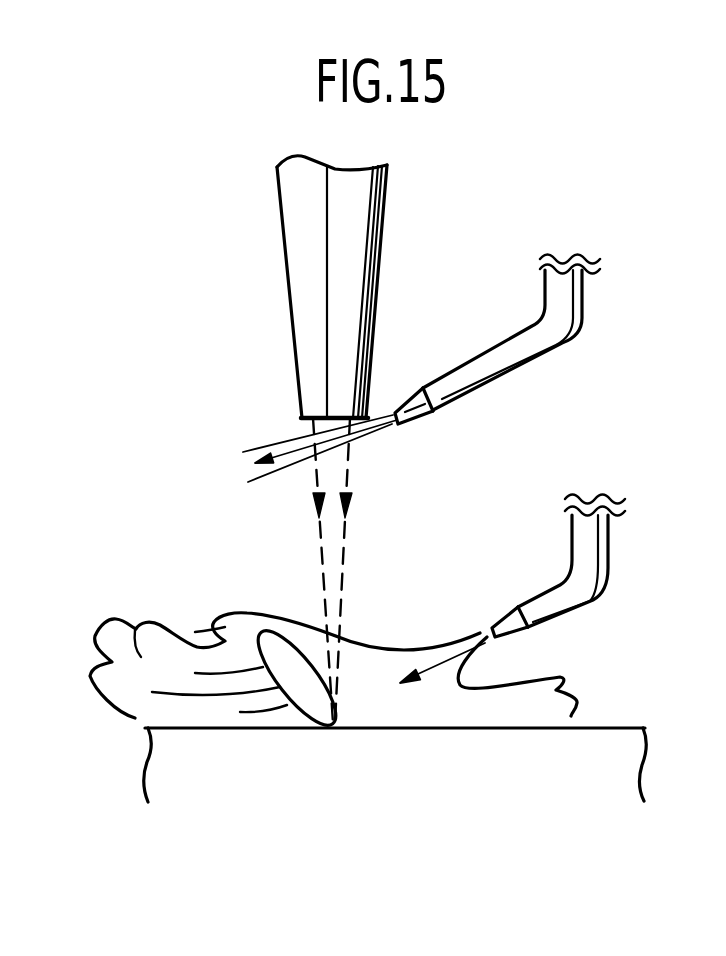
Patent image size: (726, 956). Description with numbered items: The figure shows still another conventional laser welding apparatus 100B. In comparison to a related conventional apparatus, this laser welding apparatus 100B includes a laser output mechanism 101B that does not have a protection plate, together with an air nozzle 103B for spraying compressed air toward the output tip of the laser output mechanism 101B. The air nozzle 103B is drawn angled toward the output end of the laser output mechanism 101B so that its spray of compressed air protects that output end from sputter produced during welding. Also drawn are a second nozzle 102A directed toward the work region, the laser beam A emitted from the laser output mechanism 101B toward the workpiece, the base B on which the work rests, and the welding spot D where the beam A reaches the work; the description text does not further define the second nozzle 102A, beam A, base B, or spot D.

The laser welding apparatus 100B is at (537, 226).
The laser output mechanism 101B is at (288, 270).
The air nozzle 103B is at (575, 337).
The suction / fluid nozzle 102A is at (608, 572).
The laser beam A is at (345, 553).
The base / tissue bed B is at (498, 760).
The target disc / lesion D is at (305, 718).